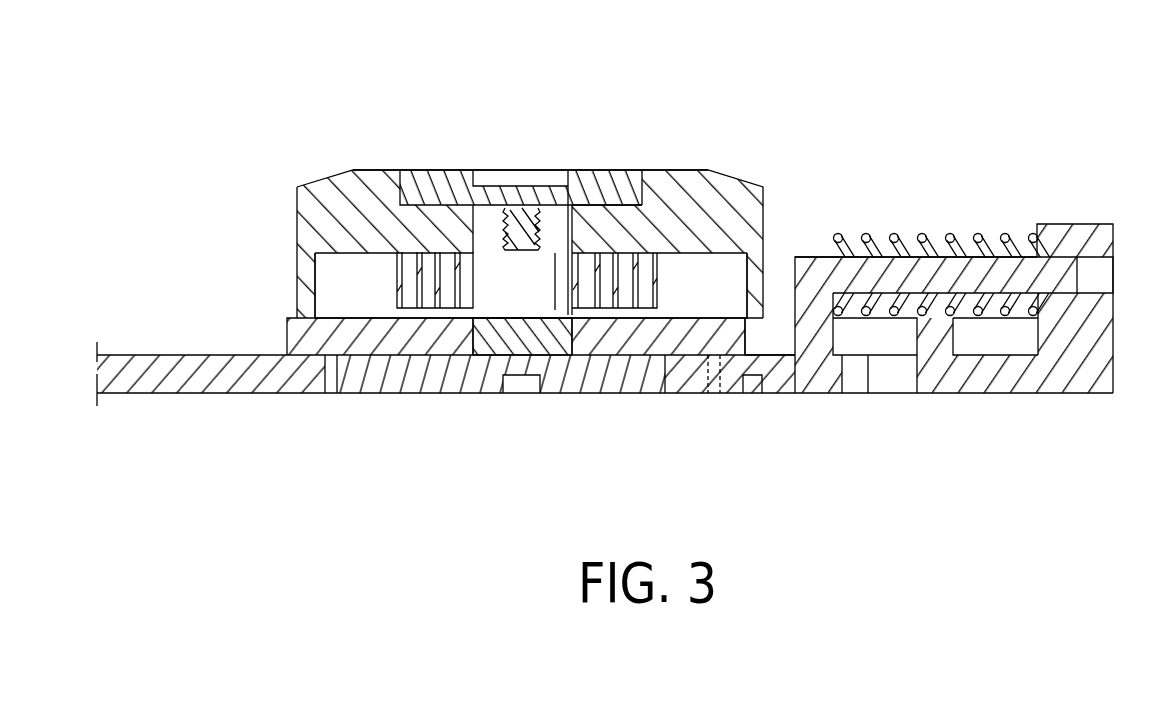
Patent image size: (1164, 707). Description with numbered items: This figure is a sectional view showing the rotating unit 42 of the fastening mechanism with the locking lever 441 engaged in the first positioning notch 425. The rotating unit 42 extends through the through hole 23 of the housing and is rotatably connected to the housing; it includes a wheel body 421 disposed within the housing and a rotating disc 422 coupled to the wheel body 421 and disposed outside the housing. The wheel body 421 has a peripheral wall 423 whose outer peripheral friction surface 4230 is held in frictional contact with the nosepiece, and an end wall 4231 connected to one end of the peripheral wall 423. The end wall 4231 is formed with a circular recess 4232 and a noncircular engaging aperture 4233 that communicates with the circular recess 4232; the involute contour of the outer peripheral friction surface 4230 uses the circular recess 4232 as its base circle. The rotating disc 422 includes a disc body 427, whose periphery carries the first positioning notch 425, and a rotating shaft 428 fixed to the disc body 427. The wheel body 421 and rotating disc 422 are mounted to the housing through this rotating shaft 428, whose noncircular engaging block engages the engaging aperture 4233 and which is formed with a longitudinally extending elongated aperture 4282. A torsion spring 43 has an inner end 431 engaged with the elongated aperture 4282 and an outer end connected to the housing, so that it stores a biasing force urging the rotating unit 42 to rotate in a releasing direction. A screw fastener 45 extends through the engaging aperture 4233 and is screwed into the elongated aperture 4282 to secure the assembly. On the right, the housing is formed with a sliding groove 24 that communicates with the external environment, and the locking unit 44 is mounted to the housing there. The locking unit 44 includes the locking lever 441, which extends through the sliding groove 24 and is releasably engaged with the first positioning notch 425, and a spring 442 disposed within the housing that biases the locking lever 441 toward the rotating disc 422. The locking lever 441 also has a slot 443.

The rotating unit 42 is at (327, 128).
The wheel body 421 is at (312, 160).
The end wall 4231 is at (378, 183).
The circular recess 4232 is at (405, 175).
The elongated aperture 4282 is at (562, 268).
The screw fastener 45 is at (608, 183).
The outer peripheral friction surface 4230 is at (298, 233).
The engaging aperture 4233 is at (470, 243).
The peripheral wall 423 is at (303, 297).
The torsion spring 43 is at (617, 312).
The inner end 431 is at (526, 292).
The rotating shaft 428 is at (480, 333).
The sliding groove 24 is at (773, 333).
The rotating disc 422 is at (352, 395).
The through hole 23 is at (574, 358).
The disc body 427 is at (395, 393).
The first positioning notch 425 is at (690, 378).
The slot 443 is at (753, 384).
The locking unit 44 is at (1018, 200).
The locking lever 441 is at (883, 262).
The spring 442 is at (950, 236).